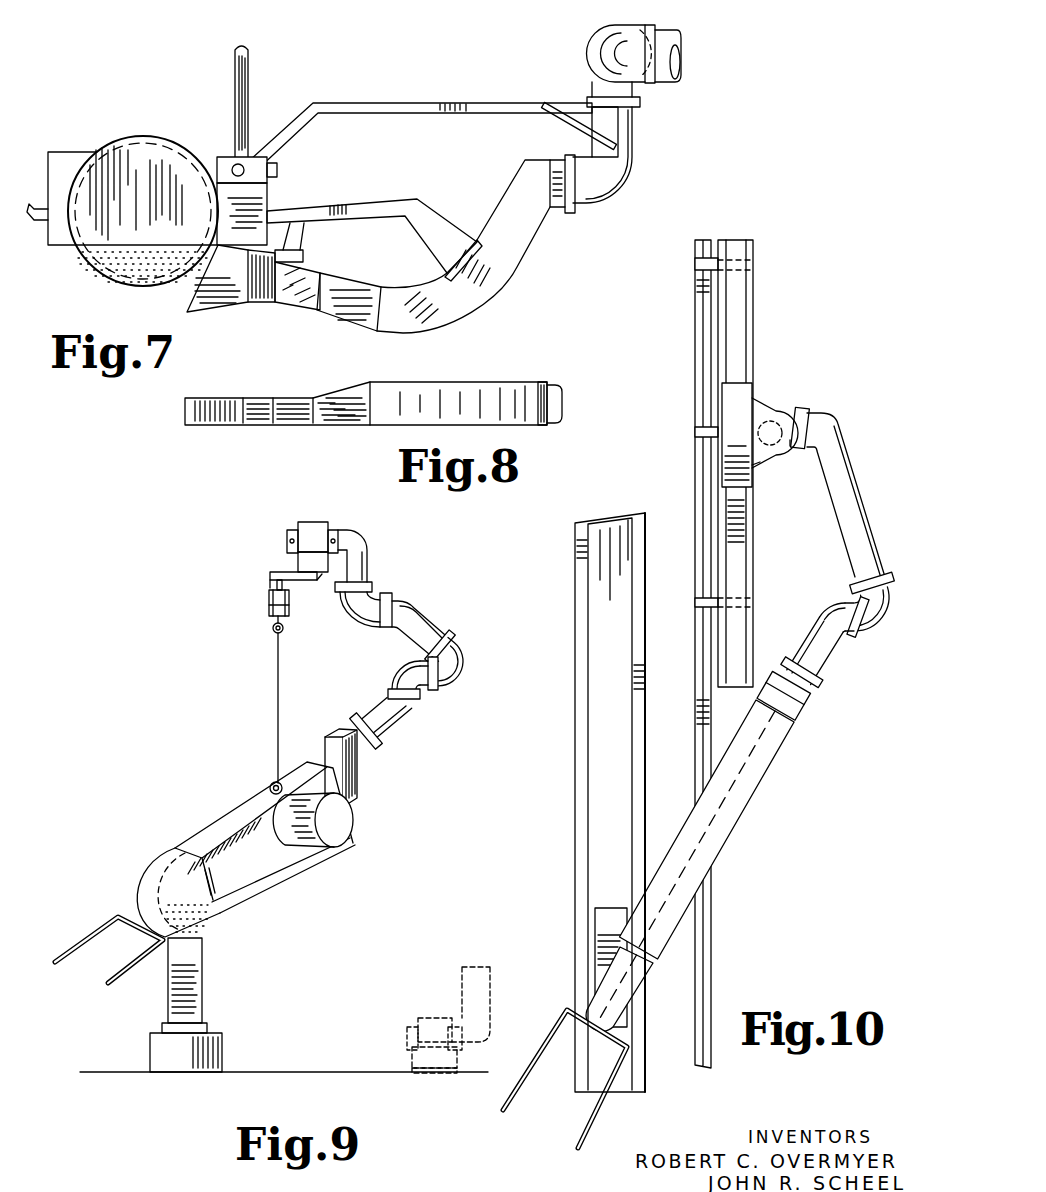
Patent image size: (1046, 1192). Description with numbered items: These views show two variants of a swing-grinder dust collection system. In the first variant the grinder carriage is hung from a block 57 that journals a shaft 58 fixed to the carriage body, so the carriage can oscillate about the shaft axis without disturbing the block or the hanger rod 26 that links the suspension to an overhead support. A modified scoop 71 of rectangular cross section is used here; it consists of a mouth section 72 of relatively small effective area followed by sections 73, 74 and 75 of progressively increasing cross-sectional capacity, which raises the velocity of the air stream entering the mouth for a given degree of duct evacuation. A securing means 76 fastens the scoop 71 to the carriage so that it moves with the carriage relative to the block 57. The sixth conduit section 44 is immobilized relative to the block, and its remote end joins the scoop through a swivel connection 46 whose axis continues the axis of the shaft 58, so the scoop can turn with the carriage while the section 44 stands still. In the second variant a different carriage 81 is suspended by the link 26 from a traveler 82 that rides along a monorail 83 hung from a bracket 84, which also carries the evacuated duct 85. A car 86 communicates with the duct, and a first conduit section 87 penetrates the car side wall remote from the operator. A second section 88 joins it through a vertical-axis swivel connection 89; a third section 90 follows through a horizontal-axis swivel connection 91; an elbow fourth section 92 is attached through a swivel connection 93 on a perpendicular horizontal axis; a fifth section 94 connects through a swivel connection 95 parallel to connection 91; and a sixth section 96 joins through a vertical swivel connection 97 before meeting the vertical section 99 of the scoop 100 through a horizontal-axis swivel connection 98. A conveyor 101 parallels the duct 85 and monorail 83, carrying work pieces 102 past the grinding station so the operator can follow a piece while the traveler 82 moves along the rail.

In FIG. 9, the hanger rod 26 is at (281, 683).
In FIG. 7, the sixth conduit section 44 is at (637, 167).
In FIG. 7, the swivel connection 46 is at (568, 212).
In FIG. 7, the block 57 is at (227, 157).
In FIG. 7, the shaft 58 is at (277, 168).
In FIG. 7, the scoop 71 is at (452, 312).
In FIG. 8, the scoop 71 is at (495, 382).
In FIG. 8, the mouth section 72 is at (238, 425).
In FIG. 8, the scoop section 73 is at (265, 425).
In FIG. 8, the scoop section 74 is at (298, 425).
In FIG. 8, the scoop section 75 is at (348, 425).
In FIG. 7, the securing means 76 is at (417, 203).
In FIG. 9, the carriage 81 is at (242, 806).
In FIG. 10, the carriage 81 is at (733, 833).
In FIG. 9, the traveler 82 is at (284, 625).
In FIG. 9, the monorail 83 is at (276, 587).
In FIG. 9, the bracket 84 is at (273, 572).
In FIG. 9, the duct 85 is at (317, 565).
In FIG. 10, the duct 85 is at (747, 322).
In FIG. 9, the car 86 is at (313, 530).
In FIG. 10, the car 86 is at (737, 435).
In FIG. 9, the first conduit section 87 is at (355, 543).
In FIG. 10, the first conduit section 87 is at (760, 410).
In FIG. 9, the second conduit section 88 is at (352, 618).
In FIG. 10, the second conduit section 88 is at (788, 445).
In FIG. 9, the swivel connection 89 is at (372, 587).
In FIG. 10, the swivel connection 89 is at (790, 407).
In FIG. 9, the third conduit section 90 is at (432, 618).
In FIG. 10, the third conduit section 90 is at (845, 455).
In FIG. 9, the swivel connection 91 is at (383, 632).
In FIG. 10, the swivel connection 91 is at (800, 410).
In FIG. 9, the fourth conduit section 92 is at (460, 664).
In FIG. 10, the fourth conduit section 92 is at (876, 632).
In FIG. 9, the swivel connection 93 is at (452, 641).
In FIG. 10, the swivel connection 93 is at (869, 572).
In FIG. 9, the fifth conduit section 94 is at (412, 668).
In FIG. 10, the fifth conduit section 94 is at (842, 630).
In FIG. 9, the swivel connection 95 is at (437, 692).
In FIG. 10, the swivel connection 95 is at (848, 603).
In FIG. 9, the sixth conduit section 96 is at (380, 742).
In FIG. 10, the sixth conduit section 96 is at (802, 650).
In FIG. 9, the swivel connection 97 is at (388, 693).
In FIG. 10, the swivel connection 97 is at (805, 622).
In FIG. 9, the swivel connection 98 is at (372, 752).
In FIG. 10, the swivel connection 98 is at (812, 676).
In FIG. 9, the vertical section 99 is at (326, 745).
In FIG. 10, the vertical section 99 is at (802, 704).
In FIG. 9, the scoop 100 is at (300, 856).
In FIG. 9, the conveyor 101 is at (210, 1031).
In FIG. 10, the conveyor 101 is at (608, 537).
In FIG. 9, the work pieces 102 is at (203, 969).
In FIG. 10, the work pieces 102 is at (605, 920).